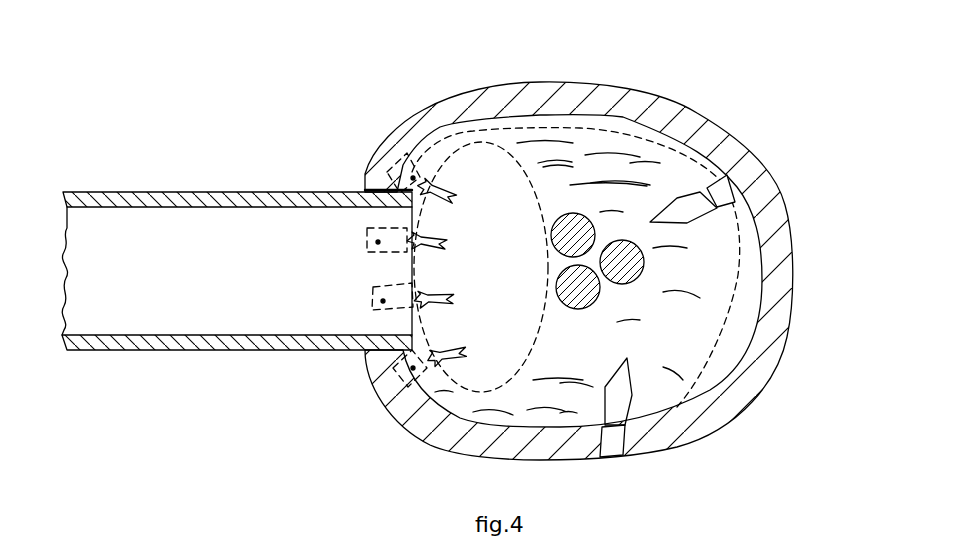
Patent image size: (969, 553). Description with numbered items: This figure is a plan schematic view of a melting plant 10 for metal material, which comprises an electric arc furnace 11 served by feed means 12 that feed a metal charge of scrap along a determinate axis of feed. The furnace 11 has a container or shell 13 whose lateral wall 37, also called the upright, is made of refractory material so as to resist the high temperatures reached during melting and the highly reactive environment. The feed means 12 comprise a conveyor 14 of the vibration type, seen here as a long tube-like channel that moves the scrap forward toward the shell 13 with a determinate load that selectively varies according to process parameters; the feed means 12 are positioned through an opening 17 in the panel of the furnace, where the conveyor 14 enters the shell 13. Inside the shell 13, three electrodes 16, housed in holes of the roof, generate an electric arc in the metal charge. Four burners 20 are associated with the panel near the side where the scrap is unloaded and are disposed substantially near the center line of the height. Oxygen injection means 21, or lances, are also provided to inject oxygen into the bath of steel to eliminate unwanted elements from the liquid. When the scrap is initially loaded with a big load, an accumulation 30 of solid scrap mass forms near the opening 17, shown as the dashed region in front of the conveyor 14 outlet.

The melting plant 10 is at (292, 112).
The electric arc furnace 11 is at (745, 131).
The feed means 12 is at (173, 192).
The shell 13 is at (556, 98).
The conveyor 14 is at (90, 222).
The electrodes 16 is at (570, 240).
The opening 17 is at (383, 191).
The burners 20 is at (410, 153).
The oxygen injection means 21 is at (728, 190).
The accumulation 30 is at (482, 168).
The lateral wall 37 is at (755, 328).